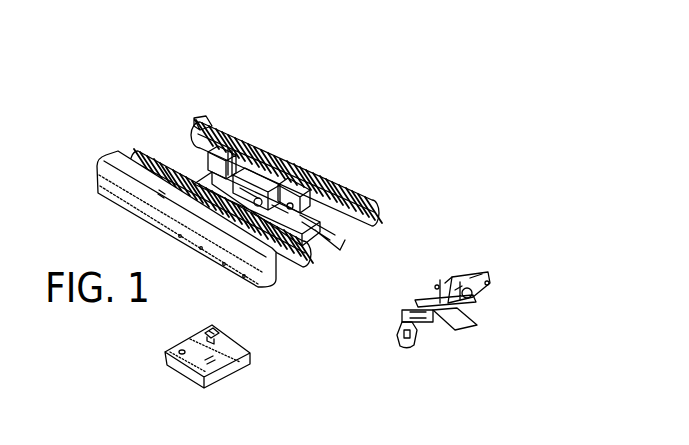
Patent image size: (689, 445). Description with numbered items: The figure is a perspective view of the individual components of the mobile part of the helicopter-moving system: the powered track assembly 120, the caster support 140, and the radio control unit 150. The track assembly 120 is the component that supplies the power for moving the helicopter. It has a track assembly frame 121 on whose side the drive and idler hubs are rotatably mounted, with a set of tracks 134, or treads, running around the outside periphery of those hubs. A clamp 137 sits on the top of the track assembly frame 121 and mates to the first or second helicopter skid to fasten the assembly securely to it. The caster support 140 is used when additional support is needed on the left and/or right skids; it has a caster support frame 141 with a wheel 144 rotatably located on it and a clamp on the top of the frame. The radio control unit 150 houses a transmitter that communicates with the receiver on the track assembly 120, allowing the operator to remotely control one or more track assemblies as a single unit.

The powered track assembly 120 is at (251, 148).
The track assembly frame 121 is at (297, 217).
The set of tracks 134 is at (200, 123).
The clamp 137 is at (230, 155).
The caster support 140 is at (489, 300).
The caster support frame 141 is at (462, 328).
The wheel 144 is at (402, 347).
The radio control unit 150 is at (233, 370).